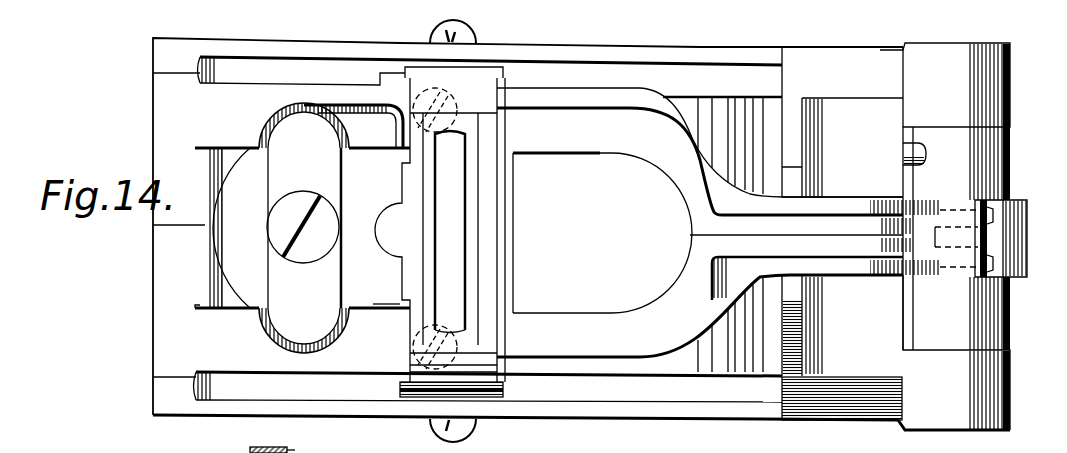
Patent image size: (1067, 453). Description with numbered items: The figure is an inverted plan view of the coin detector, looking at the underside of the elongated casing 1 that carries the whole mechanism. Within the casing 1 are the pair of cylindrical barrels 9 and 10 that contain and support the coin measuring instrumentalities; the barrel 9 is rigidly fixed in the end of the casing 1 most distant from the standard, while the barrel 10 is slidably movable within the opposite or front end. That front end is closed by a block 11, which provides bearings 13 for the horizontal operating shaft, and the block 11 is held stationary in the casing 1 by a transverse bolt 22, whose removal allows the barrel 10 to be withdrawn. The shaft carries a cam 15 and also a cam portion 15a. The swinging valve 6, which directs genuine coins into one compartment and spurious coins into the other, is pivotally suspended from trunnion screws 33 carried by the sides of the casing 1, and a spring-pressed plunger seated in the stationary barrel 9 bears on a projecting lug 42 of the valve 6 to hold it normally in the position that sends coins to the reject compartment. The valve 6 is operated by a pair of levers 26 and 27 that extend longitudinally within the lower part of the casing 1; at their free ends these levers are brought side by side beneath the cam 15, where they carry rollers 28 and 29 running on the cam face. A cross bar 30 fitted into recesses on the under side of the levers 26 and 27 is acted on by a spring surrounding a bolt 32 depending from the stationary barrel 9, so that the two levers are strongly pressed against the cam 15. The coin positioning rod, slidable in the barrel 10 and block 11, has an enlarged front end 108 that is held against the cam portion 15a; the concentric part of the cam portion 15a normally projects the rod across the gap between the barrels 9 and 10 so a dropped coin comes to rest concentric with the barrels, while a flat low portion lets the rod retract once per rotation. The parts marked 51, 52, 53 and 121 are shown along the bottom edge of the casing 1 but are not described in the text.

The casing 1 is at (572, 53).
The swinging valve 6 is at (488, 222).
The cylindrical barrel 9 is at (334, 228).
The cylindrical barrel 10 is at (700, 230).
The block 11 is at (842, 325).
The bearings 13 is at (1010, 78).
The cam 15 is at (1030, 245).
The cam portion 15a is at (1003, 153).
The transverse bolt 22 is at (745, 368).
The lever 26 is at (568, 323).
The lever 27 is at (568, 143).
The roller 28 is at (995, 275).
The roller 29 is at (990, 220).
The cross bar 30 is at (282, 289).
The bolt 32 is at (322, 225).
The trunnion screws 33 is at (462, 26).
The projecting lug 42 is at (387, 222).
The rail block 51 is at (210, 447).
The rail 52 is at (524, 452).
The rail piece 53 is at (590, 448).
The enlarged front end 108 is at (925, 152).
The strip 121 is at (290, 449).